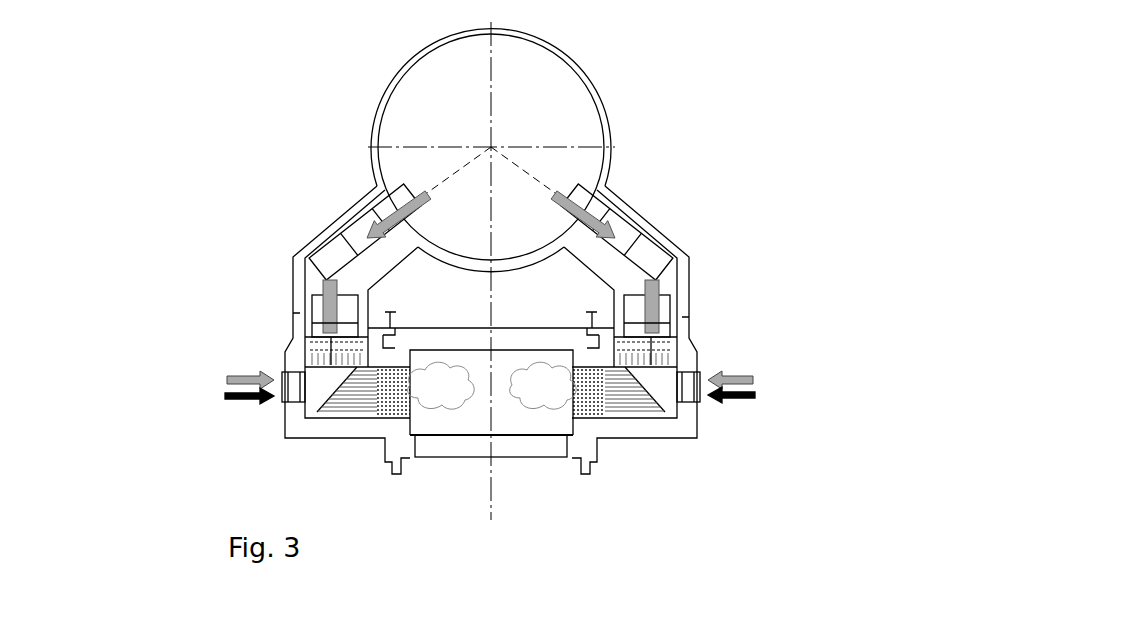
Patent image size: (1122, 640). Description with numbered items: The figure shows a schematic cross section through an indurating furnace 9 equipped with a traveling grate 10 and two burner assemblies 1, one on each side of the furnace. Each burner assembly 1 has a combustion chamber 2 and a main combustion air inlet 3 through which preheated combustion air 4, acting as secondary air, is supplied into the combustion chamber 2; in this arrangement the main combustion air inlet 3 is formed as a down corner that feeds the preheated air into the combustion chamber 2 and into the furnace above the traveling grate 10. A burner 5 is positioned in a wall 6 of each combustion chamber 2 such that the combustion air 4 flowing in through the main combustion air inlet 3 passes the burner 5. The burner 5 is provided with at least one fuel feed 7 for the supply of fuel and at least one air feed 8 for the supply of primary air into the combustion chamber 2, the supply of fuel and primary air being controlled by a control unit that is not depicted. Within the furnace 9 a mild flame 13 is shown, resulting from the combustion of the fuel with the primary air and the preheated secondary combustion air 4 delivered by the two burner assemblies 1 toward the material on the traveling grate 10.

The burner assembly 1 is at (277, 350).
The combustion chamber 2 is at (363, 395).
The main combustion air inlet 3 is at (340, 240).
The preheated combustion air 4 is at (327, 278).
The burner 5 is at (290, 388).
The wall 6 is at (295, 423).
The fuel feed 7 is at (235, 398).
The air feed 8 is at (242, 373).
The indurating furnace 9 is at (482, 418).
The traveling grate 10 is at (532, 450).
The mild flame 13 is at (442, 400).